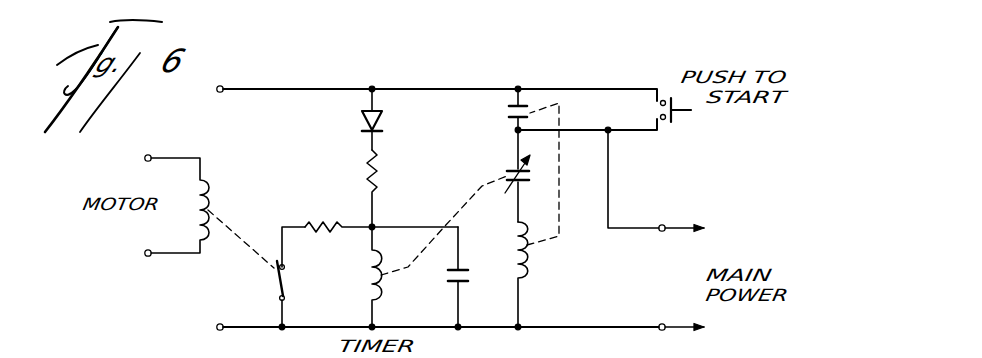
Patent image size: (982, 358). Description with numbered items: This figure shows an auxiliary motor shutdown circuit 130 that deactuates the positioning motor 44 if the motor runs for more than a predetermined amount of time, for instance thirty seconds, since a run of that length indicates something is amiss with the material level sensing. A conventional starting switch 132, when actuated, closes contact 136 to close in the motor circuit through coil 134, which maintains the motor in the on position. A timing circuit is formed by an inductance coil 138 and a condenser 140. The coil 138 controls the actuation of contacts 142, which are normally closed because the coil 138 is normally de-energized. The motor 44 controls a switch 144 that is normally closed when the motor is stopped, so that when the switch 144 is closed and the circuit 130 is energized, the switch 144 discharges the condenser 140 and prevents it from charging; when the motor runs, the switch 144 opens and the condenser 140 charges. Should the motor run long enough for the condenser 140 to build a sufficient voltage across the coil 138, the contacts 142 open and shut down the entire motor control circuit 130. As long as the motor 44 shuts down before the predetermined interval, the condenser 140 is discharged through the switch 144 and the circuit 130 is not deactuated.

The positioning motor 44 is at (207, 186).
The shutdown circuit 130 is at (440, 89).
The starting switch 132 is at (683, 113).
The coil 134 is at (526, 258).
The contact 136 is at (505, 112).
The inductance coil 138 is at (370, 289).
The condenser 140 is at (452, 278).
The contacts 142 is at (510, 176).
The switch 144 is at (246, 289).